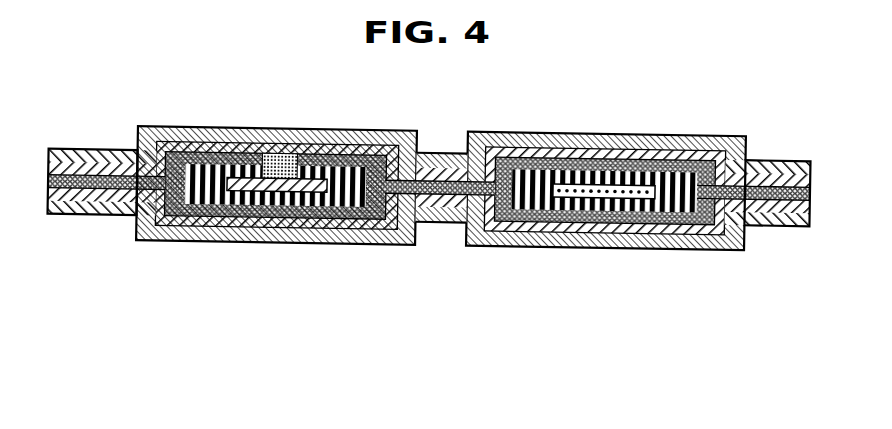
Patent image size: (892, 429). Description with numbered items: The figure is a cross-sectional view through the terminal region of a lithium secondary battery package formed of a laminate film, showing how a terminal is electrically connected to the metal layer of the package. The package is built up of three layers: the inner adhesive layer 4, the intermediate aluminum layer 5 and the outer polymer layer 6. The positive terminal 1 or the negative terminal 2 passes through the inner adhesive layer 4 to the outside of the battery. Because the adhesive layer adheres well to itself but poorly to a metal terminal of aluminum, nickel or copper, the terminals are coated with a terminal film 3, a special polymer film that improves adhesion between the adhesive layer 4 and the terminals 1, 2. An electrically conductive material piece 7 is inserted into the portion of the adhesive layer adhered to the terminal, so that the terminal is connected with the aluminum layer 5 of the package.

The positive terminal 1 is at (270, 204).
The negative terminal 2 is at (597, 210).
The terminal film 3 is at (194, 196).
The inner adhesive layer 4 is at (496, 203).
The intermediate aluminum layer 5 is at (406, 215).
The outer polymer layer 6 is at (333, 258).
The electrically conductive material piece 7 is at (295, 156).